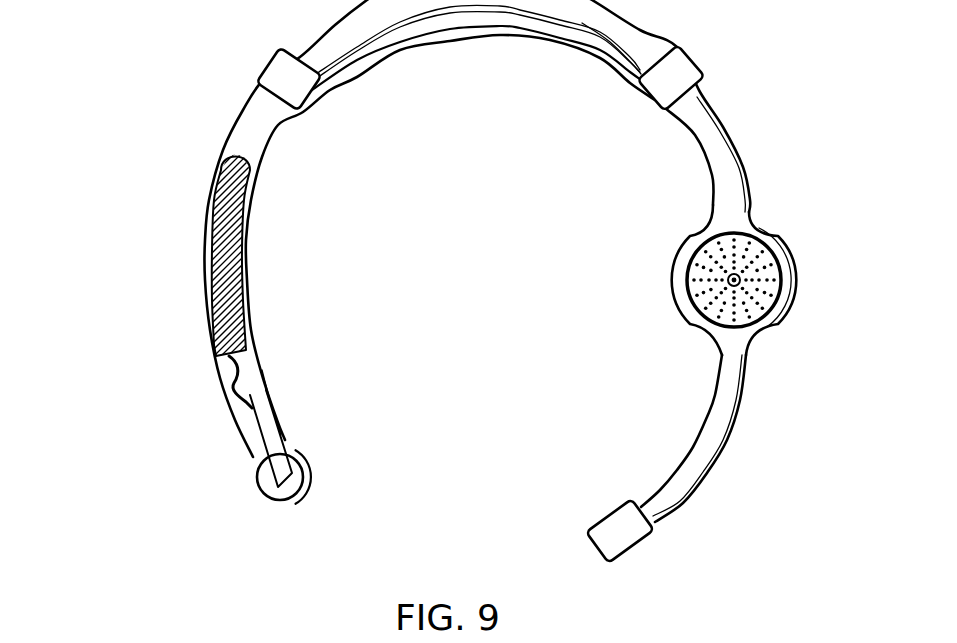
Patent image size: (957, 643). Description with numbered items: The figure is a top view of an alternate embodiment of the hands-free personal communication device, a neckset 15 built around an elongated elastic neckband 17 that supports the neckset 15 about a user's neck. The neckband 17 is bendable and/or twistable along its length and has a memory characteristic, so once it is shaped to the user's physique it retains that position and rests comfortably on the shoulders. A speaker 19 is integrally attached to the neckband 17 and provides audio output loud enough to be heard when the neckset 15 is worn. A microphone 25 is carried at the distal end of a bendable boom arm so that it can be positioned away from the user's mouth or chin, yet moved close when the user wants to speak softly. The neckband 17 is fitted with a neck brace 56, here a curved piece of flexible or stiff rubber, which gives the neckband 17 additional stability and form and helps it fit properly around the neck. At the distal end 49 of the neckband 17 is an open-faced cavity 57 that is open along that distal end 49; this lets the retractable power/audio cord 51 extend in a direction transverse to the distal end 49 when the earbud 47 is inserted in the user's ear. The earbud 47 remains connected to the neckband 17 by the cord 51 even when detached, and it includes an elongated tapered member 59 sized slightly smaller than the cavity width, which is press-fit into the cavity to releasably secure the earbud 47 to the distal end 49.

The neckset 15 is at (515, 127).
The elastic neckband 17 is at (720, 142).
The speaker 19 is at (770, 272).
The microphone 25 is at (622, 540).
The earbud 47 is at (280, 490).
The distal end 49 is at (170, 392).
The retractable power/audio cord 51 is at (210, 245).
The neck brace 56 is at (685, 63).
The open-faced cavity 57 is at (238, 288).
The elongated tapered member 59 is at (258, 428).